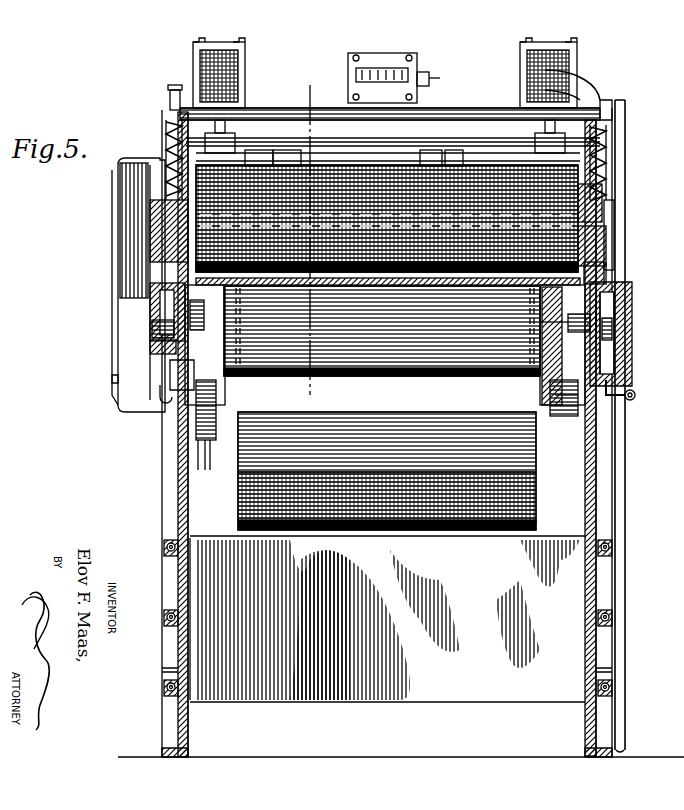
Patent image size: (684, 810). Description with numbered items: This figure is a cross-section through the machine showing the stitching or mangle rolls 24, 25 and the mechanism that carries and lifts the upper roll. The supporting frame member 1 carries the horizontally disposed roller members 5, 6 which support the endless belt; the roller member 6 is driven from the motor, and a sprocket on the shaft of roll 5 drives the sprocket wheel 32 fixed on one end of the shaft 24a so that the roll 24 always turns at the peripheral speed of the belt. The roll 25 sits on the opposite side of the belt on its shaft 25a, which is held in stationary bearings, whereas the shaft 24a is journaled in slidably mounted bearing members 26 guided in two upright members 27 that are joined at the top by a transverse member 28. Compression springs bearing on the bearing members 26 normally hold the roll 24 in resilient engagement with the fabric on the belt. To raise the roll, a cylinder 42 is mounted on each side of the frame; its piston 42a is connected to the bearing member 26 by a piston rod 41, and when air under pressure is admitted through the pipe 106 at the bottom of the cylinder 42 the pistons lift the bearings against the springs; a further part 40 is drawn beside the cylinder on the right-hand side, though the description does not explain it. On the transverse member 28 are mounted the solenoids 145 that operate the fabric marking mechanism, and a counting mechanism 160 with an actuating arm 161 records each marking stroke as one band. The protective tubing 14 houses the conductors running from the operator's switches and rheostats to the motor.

The supporting frame member 1 is at (163, 635).
The roller member 5 is at (236, 487).
The roller member 6 is at (300, 237).
The protective tubing 14 is at (626, 625).
The stitching or mangle roll 24 is at (168, 160).
The rotatable shaft 24a is at (614, 215).
The stitching or mangle roll 25 is at (530, 358).
The rotatable shaft 25a is at (584, 320).
The slidably mounted bearing members 26 is at (152, 240).
The upright members 27 is at (168, 130).
The transverse member 28 is at (176, 108).
The sprocket wheel 32 is at (148, 203).
The valve 40 is at (614, 328).
The piston rod 41 is at (152, 280).
The cylinder 42 is at (150, 318).
The piston 42a is at (148, 340).
The pipe 106 is at (628, 392).
The solenoids 145 is at (240, 48).
The counting mechanism 160 is at (390, 53).
The actuating arm 161 is at (430, 86).